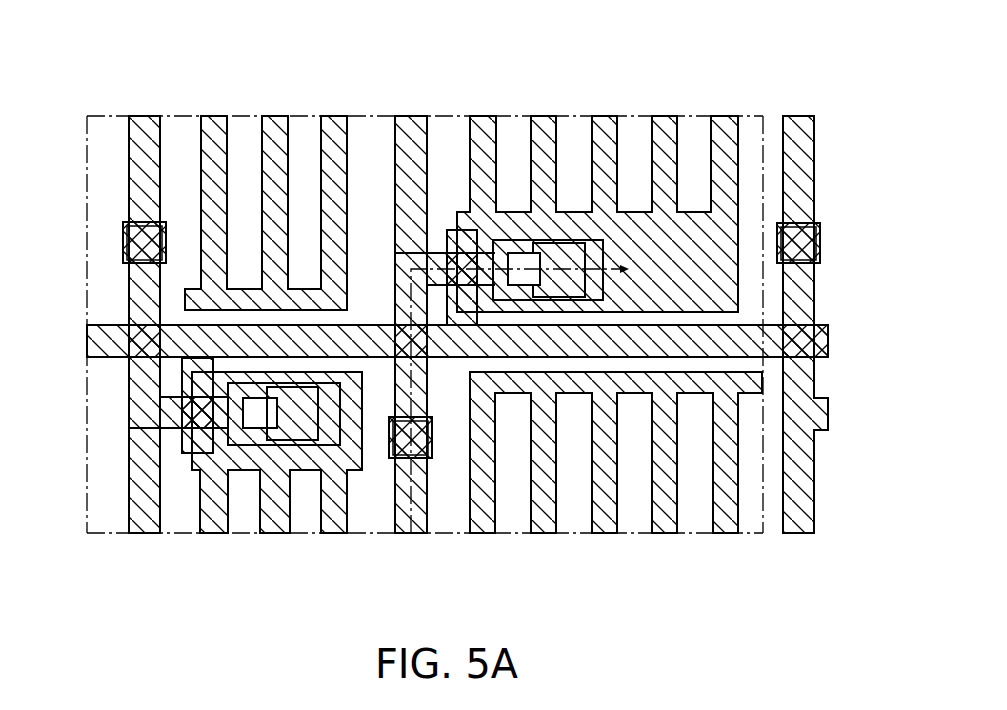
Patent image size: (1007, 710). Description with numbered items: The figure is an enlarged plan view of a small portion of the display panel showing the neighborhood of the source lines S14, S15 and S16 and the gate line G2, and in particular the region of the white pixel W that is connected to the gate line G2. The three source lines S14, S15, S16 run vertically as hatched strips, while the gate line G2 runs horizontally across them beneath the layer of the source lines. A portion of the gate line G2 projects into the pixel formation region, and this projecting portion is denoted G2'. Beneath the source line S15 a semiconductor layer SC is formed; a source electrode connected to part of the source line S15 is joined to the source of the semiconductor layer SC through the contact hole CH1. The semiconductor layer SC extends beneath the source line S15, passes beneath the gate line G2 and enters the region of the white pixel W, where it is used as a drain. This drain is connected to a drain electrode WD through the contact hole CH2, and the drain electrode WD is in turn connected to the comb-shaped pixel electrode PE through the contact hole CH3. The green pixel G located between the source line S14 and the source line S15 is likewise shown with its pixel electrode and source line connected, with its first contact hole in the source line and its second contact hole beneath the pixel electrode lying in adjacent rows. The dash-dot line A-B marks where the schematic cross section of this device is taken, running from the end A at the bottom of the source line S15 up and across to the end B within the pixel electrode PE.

The source line S14 is at (148, 116).
The source line S15 is at (416, 116).
The source line S16 is at (802, 116).
The green pixel G is at (304, 128).
The gate line G2 is at (428, 341).
The projecting portion of gate line G2' is at (329, 308).
The pixel electrode PE is at (715, 285).
The semiconductor layer SC is at (515, 305).
The contact hole CH1 is at (433, 447).
The contact hole CH2 is at (520, 255).
The contact hole CH3 is at (570, 243).
The white pixel W is at (632, 128).
The drain electrode WD is at (603, 250).
The section line end A is at (411, 546).
The section line end B is at (572, 582).